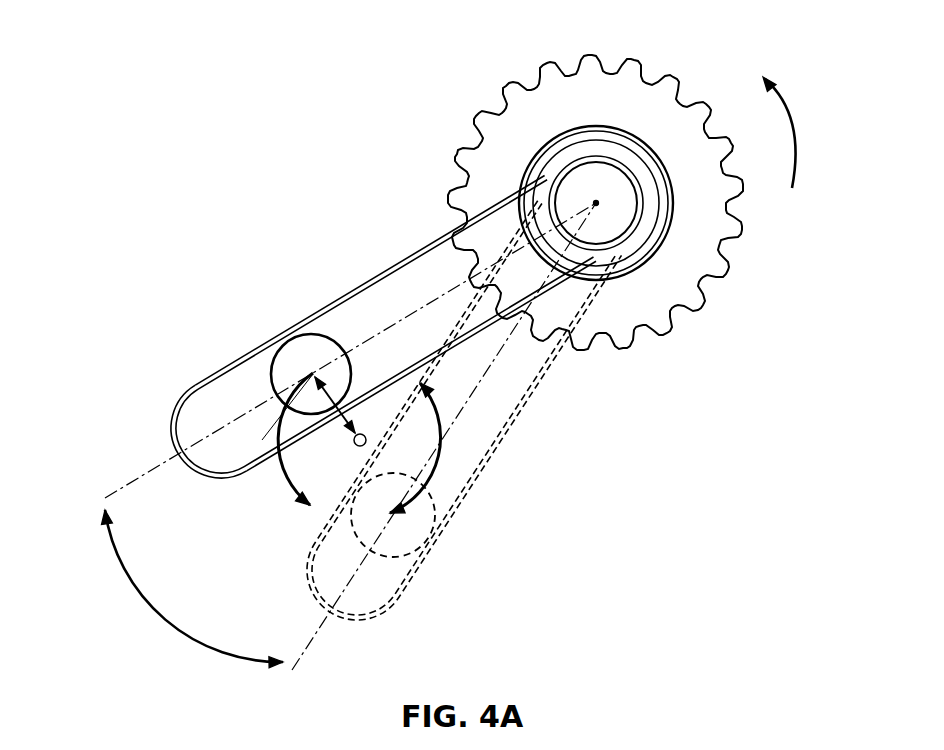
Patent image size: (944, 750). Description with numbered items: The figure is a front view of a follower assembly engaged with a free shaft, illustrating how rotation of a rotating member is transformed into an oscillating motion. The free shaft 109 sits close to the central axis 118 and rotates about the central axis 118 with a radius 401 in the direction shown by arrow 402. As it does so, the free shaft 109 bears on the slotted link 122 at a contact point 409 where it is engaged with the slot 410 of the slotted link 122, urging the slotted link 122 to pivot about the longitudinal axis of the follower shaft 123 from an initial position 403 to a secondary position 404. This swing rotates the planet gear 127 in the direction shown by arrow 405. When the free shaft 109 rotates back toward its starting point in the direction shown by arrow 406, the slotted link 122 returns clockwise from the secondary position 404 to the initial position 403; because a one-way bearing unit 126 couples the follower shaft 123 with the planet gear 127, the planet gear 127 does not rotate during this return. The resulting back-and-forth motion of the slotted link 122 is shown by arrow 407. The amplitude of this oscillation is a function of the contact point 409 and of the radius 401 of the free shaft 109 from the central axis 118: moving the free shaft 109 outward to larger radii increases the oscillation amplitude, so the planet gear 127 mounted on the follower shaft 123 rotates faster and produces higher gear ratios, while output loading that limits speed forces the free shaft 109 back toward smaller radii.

The free shaft 109 is at (271, 370).
The central axis 118 is at (352, 450).
The slotted link 122 is at (360, 288).
The follower shaft 123 is at (637, 212).
The one-way bearing unit 126 is at (637, 142).
The planet gear 127 is at (552, 62).
The radius 401 is at (211, 431).
The arrow 402 is at (291, 490).
The initial position 403 is at (158, 399).
The secondary position 404 is at (417, 592).
The arrow 405 is at (796, 125).
The arrow 406 is at (441, 449).
The arrow 407 is at (160, 614).
The contact point 409 is at (285, 333).
The slot 410 is at (402, 279).